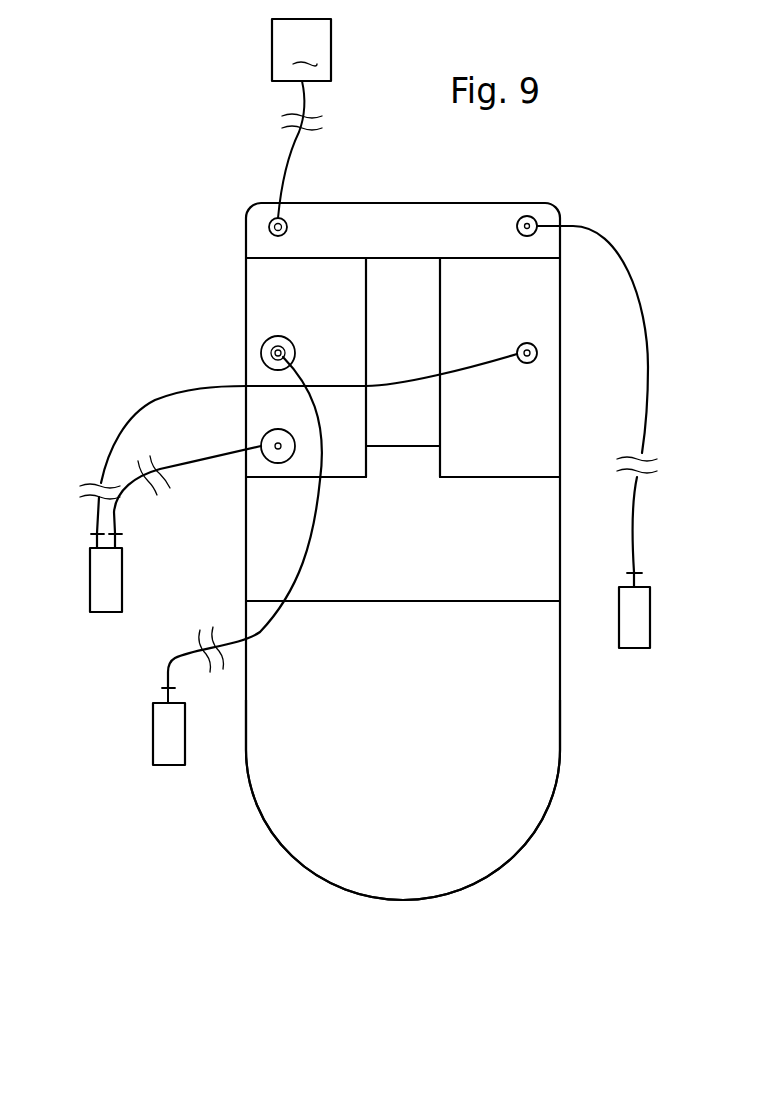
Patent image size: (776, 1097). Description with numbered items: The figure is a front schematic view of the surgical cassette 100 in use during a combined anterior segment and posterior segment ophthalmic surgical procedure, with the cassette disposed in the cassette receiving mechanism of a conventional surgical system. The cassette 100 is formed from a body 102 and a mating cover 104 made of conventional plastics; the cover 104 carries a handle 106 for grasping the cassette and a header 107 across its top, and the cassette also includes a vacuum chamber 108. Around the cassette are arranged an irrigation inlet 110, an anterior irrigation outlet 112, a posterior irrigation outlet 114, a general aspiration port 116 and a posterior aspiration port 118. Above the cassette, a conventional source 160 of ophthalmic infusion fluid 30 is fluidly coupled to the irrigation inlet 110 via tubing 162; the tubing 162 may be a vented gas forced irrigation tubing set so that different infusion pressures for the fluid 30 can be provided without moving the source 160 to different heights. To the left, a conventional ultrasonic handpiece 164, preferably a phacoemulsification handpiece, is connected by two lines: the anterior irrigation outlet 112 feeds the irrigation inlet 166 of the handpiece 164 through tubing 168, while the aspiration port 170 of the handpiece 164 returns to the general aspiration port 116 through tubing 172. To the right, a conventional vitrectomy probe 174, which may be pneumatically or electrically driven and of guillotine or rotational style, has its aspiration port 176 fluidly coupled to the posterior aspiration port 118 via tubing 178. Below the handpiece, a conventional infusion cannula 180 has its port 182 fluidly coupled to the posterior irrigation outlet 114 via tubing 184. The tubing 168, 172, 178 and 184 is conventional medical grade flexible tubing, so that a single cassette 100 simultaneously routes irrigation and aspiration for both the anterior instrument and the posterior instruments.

The ophthalmic infusion fluid 30 is at (306, 50).
The surgical cassette 100 is at (537, 460).
The body 102 is at (510, 443).
The cover 104 is at (423, 746).
The handle 106 is at (420, 361).
The header 107 is at (403, 218).
The vacuum chamber 108 is at (433, 568).
The irrigation inlet 110 is at (272, 222).
The anterior irrigation outlet 112 is at (537, 347).
The posterior irrigation outlet 114 is at (264, 343).
The general aspiration port 116 is at (263, 440).
The posterior aspiration port 118 is at (531, 217).
The source of ophthalmic infusion fluid 160 is at (331, 44).
The tubing 162 is at (287, 170).
The ultrasonic handpiece 164 is at (123, 573).
The irrigation inlet 166 is at (93, 537).
The tubing 168 is at (197, 388).
The aspiration port 170 is at (121, 540).
The tubing 172 is at (187, 463).
The vitrectomy probe 174 is at (650, 620).
The aspiration port 176 is at (641, 580).
The tubing 178 is at (607, 238).
The infusion cannula 180 is at (153, 740).
The port 182 is at (163, 693).
The tubing 184 is at (297, 582).